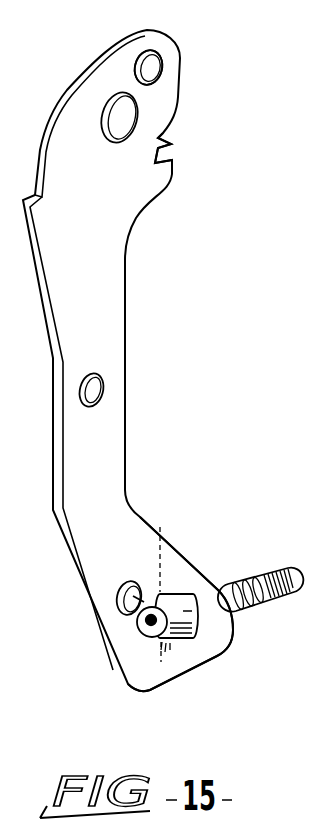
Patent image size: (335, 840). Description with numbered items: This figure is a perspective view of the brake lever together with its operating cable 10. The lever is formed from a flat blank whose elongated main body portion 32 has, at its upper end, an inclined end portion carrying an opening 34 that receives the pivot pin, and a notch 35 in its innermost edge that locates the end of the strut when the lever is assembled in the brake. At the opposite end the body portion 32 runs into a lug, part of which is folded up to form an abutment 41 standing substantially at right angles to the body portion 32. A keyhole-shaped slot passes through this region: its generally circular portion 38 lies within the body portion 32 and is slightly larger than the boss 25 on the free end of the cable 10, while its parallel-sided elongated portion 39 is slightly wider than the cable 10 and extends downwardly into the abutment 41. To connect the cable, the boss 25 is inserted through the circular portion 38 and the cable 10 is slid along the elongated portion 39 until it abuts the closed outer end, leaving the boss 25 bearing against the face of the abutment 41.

The cable 10 is at (264, 601).
The boss 25 is at (182, 623).
The main body portion 32 is at (118, 309).
The opening 34 is at (151, 64).
The notch 35 is at (172, 144).
The circular slot portion 38 is at (131, 583).
The elongated slot portion 39 is at (143, 597).
The abutment 41 is at (178, 565).